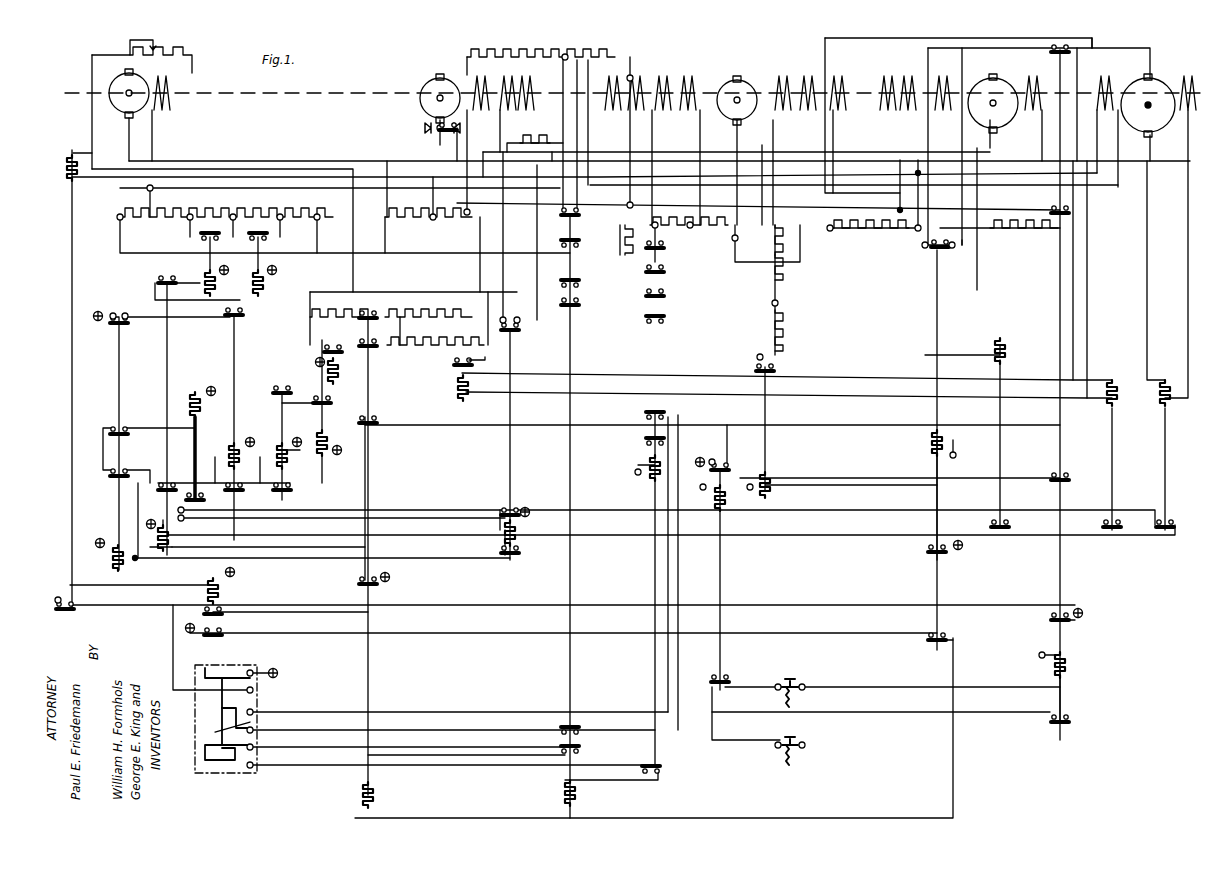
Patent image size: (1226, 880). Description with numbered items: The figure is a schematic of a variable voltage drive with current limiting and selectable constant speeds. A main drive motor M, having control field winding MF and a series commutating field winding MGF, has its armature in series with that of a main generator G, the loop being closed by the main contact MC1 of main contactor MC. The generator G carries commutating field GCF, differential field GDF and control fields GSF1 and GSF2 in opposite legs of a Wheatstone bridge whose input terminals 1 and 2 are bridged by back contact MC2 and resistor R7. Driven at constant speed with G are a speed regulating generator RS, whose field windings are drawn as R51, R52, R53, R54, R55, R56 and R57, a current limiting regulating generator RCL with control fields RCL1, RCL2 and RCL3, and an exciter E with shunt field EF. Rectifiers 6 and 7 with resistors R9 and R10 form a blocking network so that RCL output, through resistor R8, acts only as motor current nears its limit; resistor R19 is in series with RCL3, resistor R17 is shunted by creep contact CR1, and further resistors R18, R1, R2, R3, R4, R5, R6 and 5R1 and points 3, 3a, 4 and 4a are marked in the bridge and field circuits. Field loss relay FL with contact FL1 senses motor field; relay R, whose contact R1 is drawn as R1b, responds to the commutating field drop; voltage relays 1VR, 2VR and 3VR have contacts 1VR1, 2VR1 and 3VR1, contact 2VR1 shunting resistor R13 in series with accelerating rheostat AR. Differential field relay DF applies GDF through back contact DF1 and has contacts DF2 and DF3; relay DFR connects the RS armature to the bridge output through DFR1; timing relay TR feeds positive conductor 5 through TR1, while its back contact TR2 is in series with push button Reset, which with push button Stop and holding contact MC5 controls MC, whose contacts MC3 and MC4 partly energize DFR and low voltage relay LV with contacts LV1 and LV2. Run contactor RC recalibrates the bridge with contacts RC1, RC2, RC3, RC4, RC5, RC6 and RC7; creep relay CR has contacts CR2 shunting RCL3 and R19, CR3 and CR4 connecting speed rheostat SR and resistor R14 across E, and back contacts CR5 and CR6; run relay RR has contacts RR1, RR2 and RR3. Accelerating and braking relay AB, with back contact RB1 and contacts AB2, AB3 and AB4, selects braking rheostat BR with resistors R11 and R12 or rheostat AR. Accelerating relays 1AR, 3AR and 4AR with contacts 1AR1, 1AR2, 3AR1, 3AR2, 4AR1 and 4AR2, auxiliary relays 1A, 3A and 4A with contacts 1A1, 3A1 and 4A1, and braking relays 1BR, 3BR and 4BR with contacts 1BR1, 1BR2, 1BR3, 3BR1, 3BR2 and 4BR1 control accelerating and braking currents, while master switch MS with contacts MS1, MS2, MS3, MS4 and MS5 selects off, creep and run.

The exciter E is at (124, 92).
The exciter control field winding EF is at (160, 84).
The field loss relay FL is at (67, 160).
The field loss relay contact FL1 is at (78, 597).
The current limiting regulating generator RCL is at (429, 94).
The control field winding RCL1 is at (483, 78).
The control field winding RCL2 is at (462, 119).
The control field winding RCL3 is at (503, 92).
The speed regulating generator RS is at (737, 95).
The main generator G is at (993, 96).
The differential field winding GDF is at (949, 89).
The commutating field winding GCF is at (1035, 91).
The control field winding GSF1 is at (877, 87).
The control field winding GSF2 is at (894, 79).
The main drive motor M is at (1148, 97).
The motor control field winding MF is at (1108, 89).
The motor generator field MGF is at (1200, 91).
The main contactor MC is at (1042, 665).
The main contact MC1 is at (1045, 53).
The back contact MC2 is at (1045, 204).
The contact members MC3 is at (1042, 485).
The contact members MC4 is at (1045, 625).
The holding contact MC5 is at (1050, 728).
The differential field relay DF is at (952, 443).
The back contact DF1 is at (940, 231).
The contact members DF2 is at (924, 555).
The contact members DF3 is at (926, 649).
The relay DFR is at (778, 485).
The contact DFR1 is at (785, 362).
The timing relay TR is at (710, 498).
The contact TR1 is at (727, 460).
The back contact TR2 is at (707, 672).
The running contactor RC is at (638, 468).
The contact RC1 is at (675, 248).
The contact RC2 is at (675, 272).
The contact RC3 is at (675, 295).
The contact RC4 is at (675, 319).
The contact RC5 is at (636, 408).
The contact RC6 is at (636, 440).
The contact RC7 is at (667, 760).
The creep relay CR is at (581, 793).
The contact members CR1 is at (590, 216).
The contact members CR2 is at (587, 249).
The contact members CR3 is at (590, 279).
The contact members CR4 is at (587, 306).
The back contact members CR5 is at (584, 725).
The back contact member CR6 is at (584, 746).
The run relay RR is at (527, 533).
The contact RR1 is at (524, 326).
The contact members RR2 is at (527, 502).
The contact members RR3 is at (527, 554).
The voltage relay 1VR is at (1109, 385).
The contact 1VR1 is at (1106, 538).
The voltage relay 2VR is at (446, 386).
The contact 2VR1 is at (455, 363).
The voltage relay 3VR is at (1014, 349).
The contact 3VR1 is at (999, 536).
The relay R is at (1165, 384).
The relay R contact R1 R1b is at (1163, 538).
The accelerating and braking relay AB is at (379, 794).
The contact members AB2 is at (377, 357).
The contact members AB3 is at (385, 415).
The contact members AB4 is at (384, 587).
The contact RB1 is at (350, 306).
The auxiliary accelerating relay 1A is at (220, 281).
The contact 1A1 is at (207, 230).
The auxiliary accelerating relay 3A is at (268, 281).
The contact 3A1 is at (257, 230).
The auxiliary accelerating relay 4A is at (346, 371).
The contact 4A1 is at (315, 355).
The accelerating relay 1AR is at (190, 552).
The back contact 1AR1 is at (162, 272).
The front contact 1AR2 is at (133, 465).
The braking relay 1BR is at (108, 556).
The contact 1BR1 is at (103, 325).
The contact 1BR2 is at (133, 439).
The contact 1BR3 is at (124, 489).
The accelerating relay 3AR is at (230, 449).
The back contact 3AR1 is at (228, 305).
The front contact 3AR2 is at (234, 494).
The braking relay 3BR is at (215, 403).
The contact 3BR1 is at (200, 505).
The contact 3BR2 is at (182, 536).
The accelerating relay 4AR is at (297, 457).
The back contact 4AR1 is at (276, 382).
The front contact 4AR2 is at (288, 494).
The braking relay 4BR is at (336, 439).
The contact 4BR1 is at (314, 401).
The low voltage relay LV is at (227, 586).
The contact LV1 is at (229, 611).
The contact LV2 is at (220, 632).
The master switch MS is at (224, 740).
The master switch contact MS1 is at (271, 660).
The master switch contact MS2 is at (279, 684).
The master switch contact MS3 is at (279, 703).
The master switch contact MS4 is at (279, 720).
The master switch contact MS5 is at (279, 754).
The reset push button Reset is at (790, 679).
The stop push button Stop is at (789, 739).
The speed controlling rheostat SR is at (148, 229).
The contact of relay R R1 is at (618, 240).
The resistor R2 is at (868, 233).
The resistor R3 is at (694, 229).
The resistor R4 is at (794, 240).
The resistor R5 is at (723, 232).
The resistor R6 is at (794, 267).
The resistor R7 is at (1024, 233).
The series resistor R8 is at (535, 132).
The resistor R9 is at (456, 229).
The resistor R10 is at (428, 222).
The resistor R11 is at (452, 301).
The resistor R12 is at (340, 322).
The resistor R13 is at (435, 334).
The resistor R14 is at (225, 202).
The resistor R17 is at (620, 38).
The resistor R18 is at (550, 56).
The resistor R19 is at (534, 93).
The resistor R51 is at (812, 106).
The resistor R52 is at (787, 87).
The resistor R53 is at (685, 110).
The resistor R54 is at (667, 87).
The resistor R55 is at (628, 106).
The resistor R56 is at (600, 93).
The resistor R57 is at (847, 93).
The resistor 5R1 is at (799, 330).
The accelerating rheostat AR is at (418, 354).
The braking rheostat BR is at (428, 304).
The bridge input terminal 1 is at (900, 209).
The bridge input terminal 2 is at (910, 208).
The junction 3 is at (692, 230).
The junction 3a is at (755, 232).
The junction 4 is at (788, 237).
The junction 4a is at (707, 294).
The positive conductor 5 is at (674, 415).
The rectifier 6 is at (455, 139).
The rectifier 7 is at (430, 139).